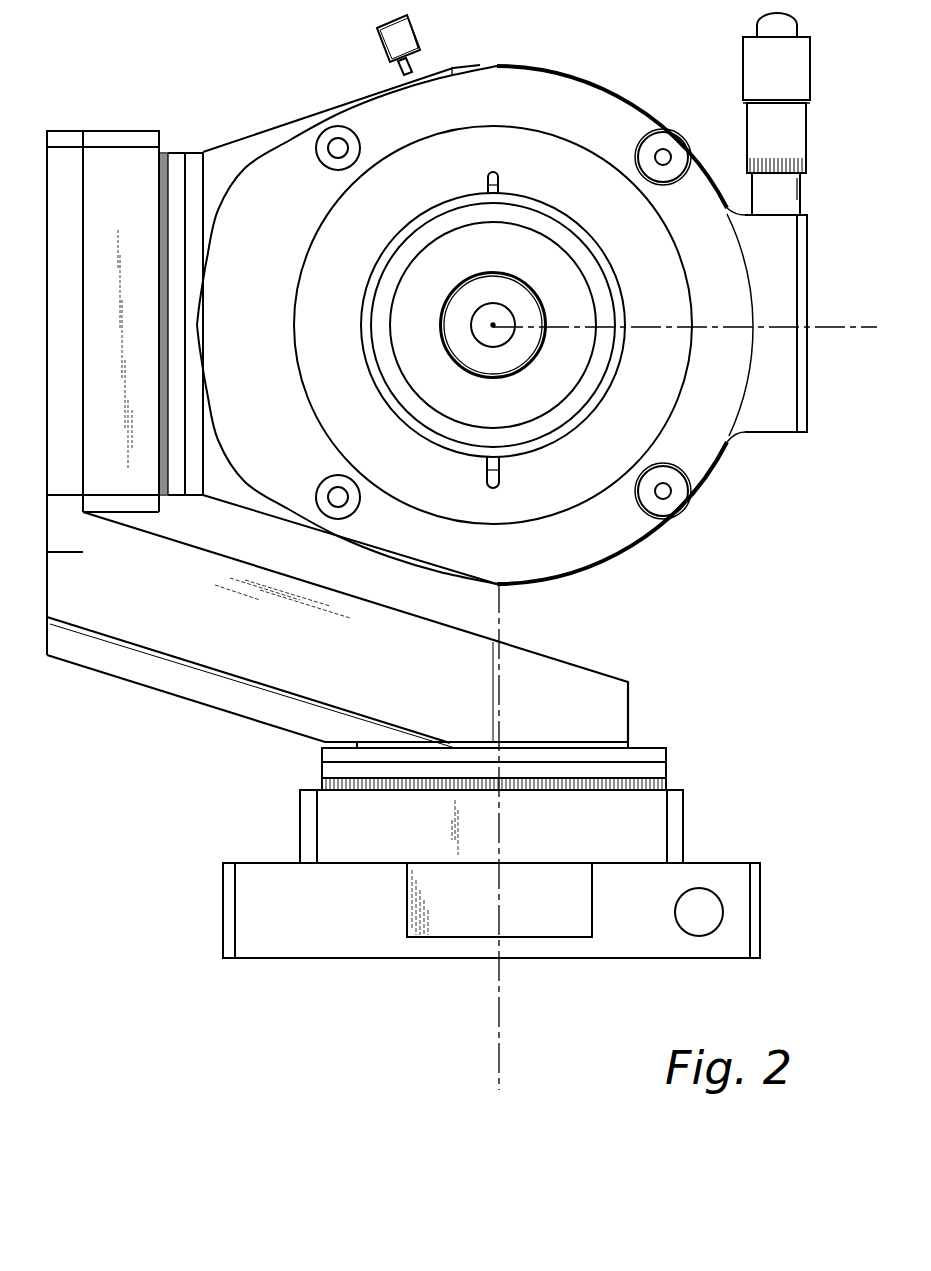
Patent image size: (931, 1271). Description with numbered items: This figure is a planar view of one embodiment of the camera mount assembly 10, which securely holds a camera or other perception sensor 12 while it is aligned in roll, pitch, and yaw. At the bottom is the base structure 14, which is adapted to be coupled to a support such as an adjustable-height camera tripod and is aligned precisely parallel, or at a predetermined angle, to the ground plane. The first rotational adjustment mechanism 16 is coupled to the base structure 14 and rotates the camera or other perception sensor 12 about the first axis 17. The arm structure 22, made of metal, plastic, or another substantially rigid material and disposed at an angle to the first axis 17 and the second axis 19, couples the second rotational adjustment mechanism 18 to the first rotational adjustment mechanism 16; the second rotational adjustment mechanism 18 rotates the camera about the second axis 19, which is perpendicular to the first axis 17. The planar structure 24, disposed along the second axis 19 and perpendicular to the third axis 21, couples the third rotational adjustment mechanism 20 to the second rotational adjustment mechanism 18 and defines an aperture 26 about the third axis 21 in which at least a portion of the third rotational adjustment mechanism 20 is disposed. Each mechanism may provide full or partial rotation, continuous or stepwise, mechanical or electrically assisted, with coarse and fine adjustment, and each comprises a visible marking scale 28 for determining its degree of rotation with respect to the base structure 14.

The camera mount assembly 10 is at (726, 162).
The camera or other perception sensor 12 is at (557, 268).
The base structure 14 is at (725, 846).
The first rotational adjustment mechanism 16 is at (674, 741).
The first axis 17 is at (507, 725).
The second rotational adjustment mechanism 18 is at (172, 136).
The second axis 19 is at (784, 318).
The third rotational adjustment mechanism 20 is at (694, 126).
The third axis 21 is at (495, 322).
The arm structure 22 is at (637, 716).
The planar structure 24 is at (622, 90).
The aperture 26 is at (381, 148).
The visible marking scale 28 is at (162, 243).